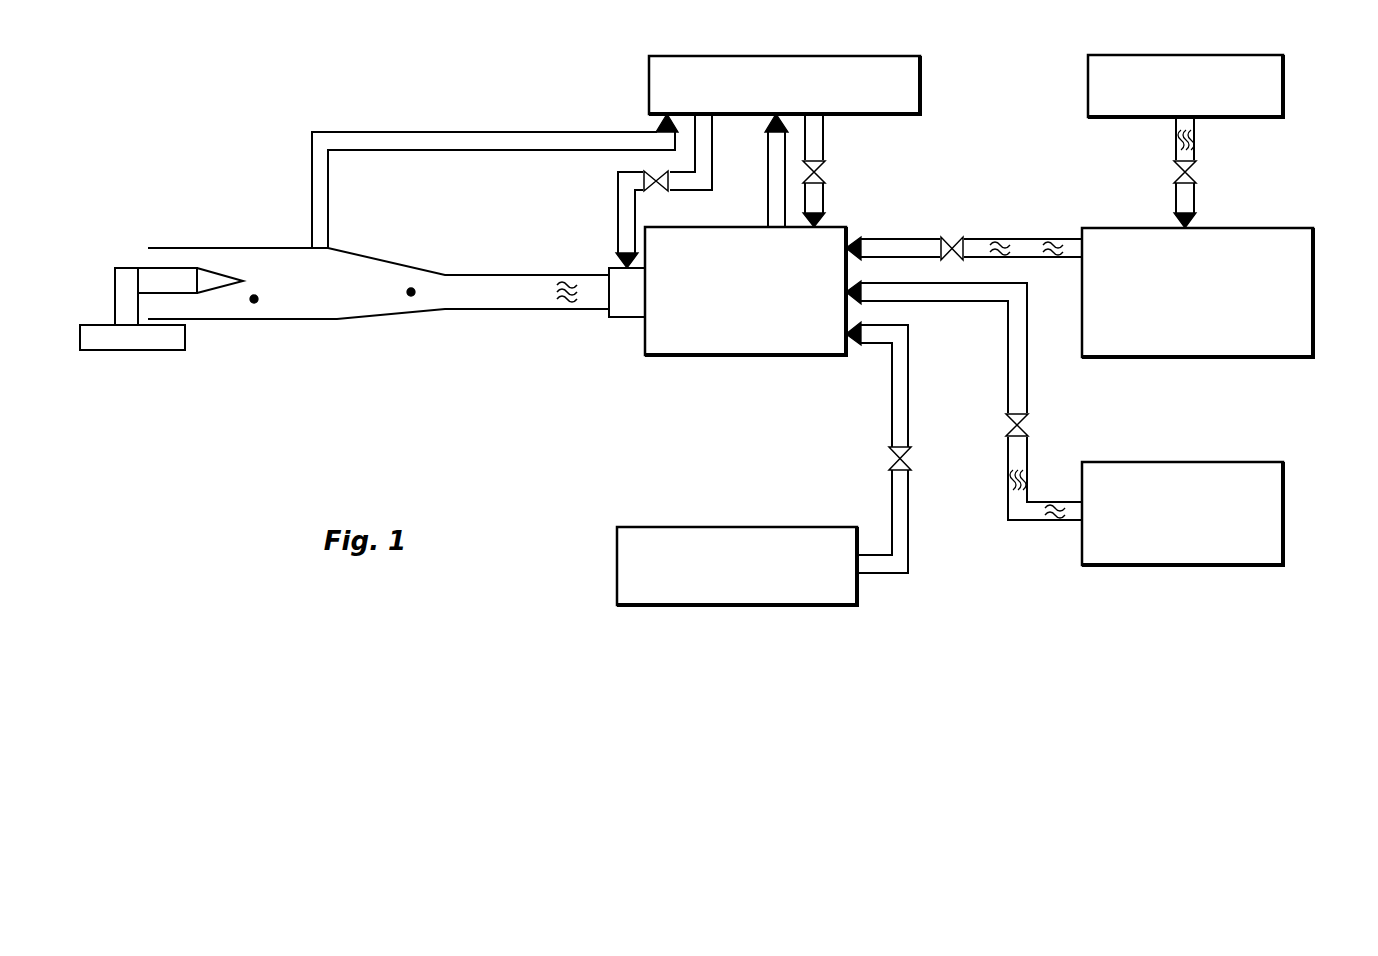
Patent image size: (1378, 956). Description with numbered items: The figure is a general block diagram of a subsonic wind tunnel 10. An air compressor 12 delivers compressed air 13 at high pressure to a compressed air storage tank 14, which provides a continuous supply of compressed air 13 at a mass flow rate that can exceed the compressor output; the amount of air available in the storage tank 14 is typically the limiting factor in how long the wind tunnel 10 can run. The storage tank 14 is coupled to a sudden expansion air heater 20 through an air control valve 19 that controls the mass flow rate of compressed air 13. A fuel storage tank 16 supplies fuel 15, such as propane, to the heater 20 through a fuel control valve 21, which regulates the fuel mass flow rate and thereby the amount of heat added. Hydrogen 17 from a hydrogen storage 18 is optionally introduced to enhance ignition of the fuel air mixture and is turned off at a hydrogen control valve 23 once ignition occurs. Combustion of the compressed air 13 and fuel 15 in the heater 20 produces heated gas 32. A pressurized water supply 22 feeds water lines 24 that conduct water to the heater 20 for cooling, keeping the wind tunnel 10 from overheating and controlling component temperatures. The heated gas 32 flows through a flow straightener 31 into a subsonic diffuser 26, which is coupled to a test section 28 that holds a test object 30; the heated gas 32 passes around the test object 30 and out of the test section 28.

The subsonic wind tunnel 10 is at (170, 85).
The air compressor 12 is at (1185, 141).
The compressed air 13 is at (1027, 250).
The compressed air storage tank 14 is at (1317, 283).
The fuel 15 is at (1022, 512).
The fuel storage tank 16 is at (1288, 503).
The hydrogen 17 is at (897, 565).
The hydrogen storage 18 is at (777, 609).
The air control valve 19 is at (954, 236).
The sudden expansion air heater 20 is at (745, 291).
The fuel control valve 21 is at (1003, 424).
The pressurized water supply 22 is at (784, 85).
The hydrogen control valve 23 is at (913, 461).
The water lines 24 is at (473, 128).
The subsonic diffuser 26 is at (379, 322).
The test section 28 is at (249, 246).
The test object 30 is at (170, 267).
The flow straightener 31 is at (625, 296).
The heated gas 32 is at (548, 292).